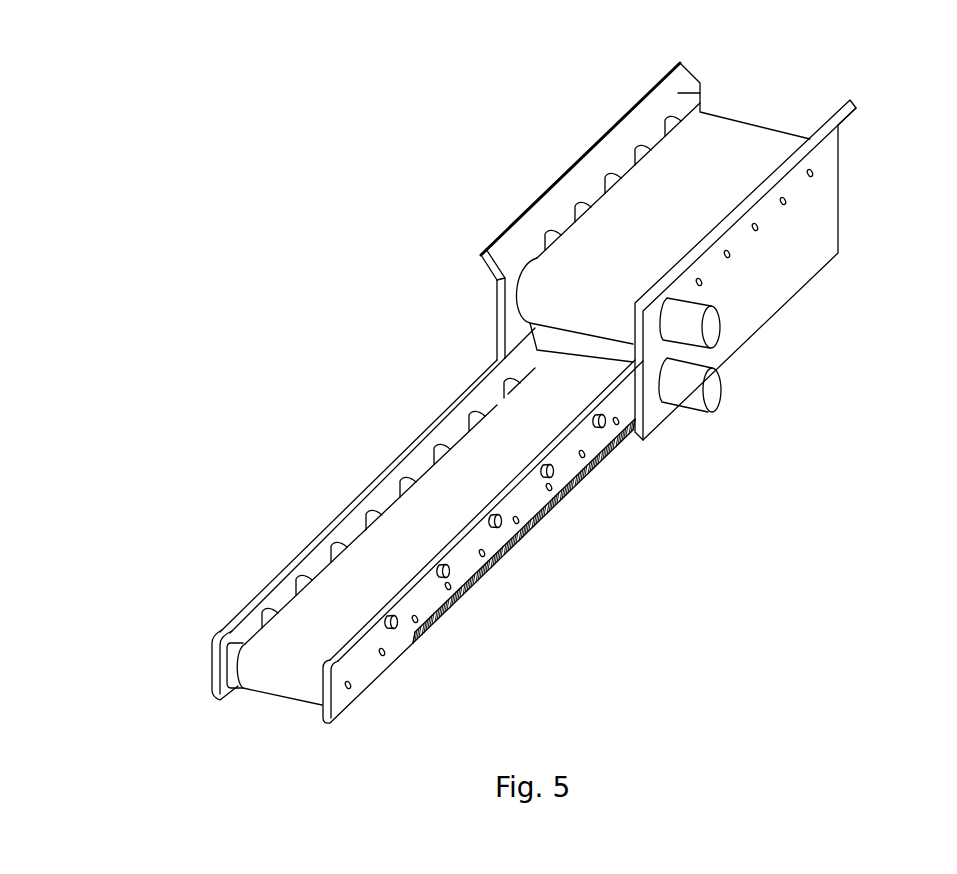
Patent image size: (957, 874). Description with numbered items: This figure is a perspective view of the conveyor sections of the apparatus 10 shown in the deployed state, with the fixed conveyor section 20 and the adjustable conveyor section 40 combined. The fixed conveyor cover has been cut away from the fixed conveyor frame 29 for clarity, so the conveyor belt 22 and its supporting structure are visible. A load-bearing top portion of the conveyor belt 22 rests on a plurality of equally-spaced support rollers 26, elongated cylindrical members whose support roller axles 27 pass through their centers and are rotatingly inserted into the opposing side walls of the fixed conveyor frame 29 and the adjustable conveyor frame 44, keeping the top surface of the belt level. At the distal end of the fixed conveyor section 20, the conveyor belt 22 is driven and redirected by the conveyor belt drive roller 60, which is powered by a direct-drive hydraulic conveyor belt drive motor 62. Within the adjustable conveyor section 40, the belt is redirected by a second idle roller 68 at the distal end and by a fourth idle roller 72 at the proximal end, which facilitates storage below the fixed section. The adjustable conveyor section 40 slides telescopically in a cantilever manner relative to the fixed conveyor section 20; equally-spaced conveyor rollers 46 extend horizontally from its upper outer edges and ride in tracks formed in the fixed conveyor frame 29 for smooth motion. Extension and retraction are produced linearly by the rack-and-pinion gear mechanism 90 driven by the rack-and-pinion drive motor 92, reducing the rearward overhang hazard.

The apparatus 10 is at (87, 121).
The fixed conveyor section 20 is at (617, 123).
The conveyor belt 22 is at (547, 242).
The support rollers 26 is at (432, 455).
The support roller axles 27 is at (416, 622).
The fixed conveyor frame 29 is at (828, 205).
The adjustable conveyor section 40 is at (534, 411).
The adjustable conveyor frame 44 is at (407, 583).
The conveyor rollers 46 is at (443, 577).
The conveyor belt drive roller 60 is at (500, 267).
The conveyor belt drive motor 62 is at (715, 327).
The second idle roller 68 is at (235, 662).
The fourth idle roller 72 is at (552, 338).
The rack-and-pinion gear mechanism 90 is at (542, 528).
The rack-and-pinion drive motor 92 is at (713, 393).